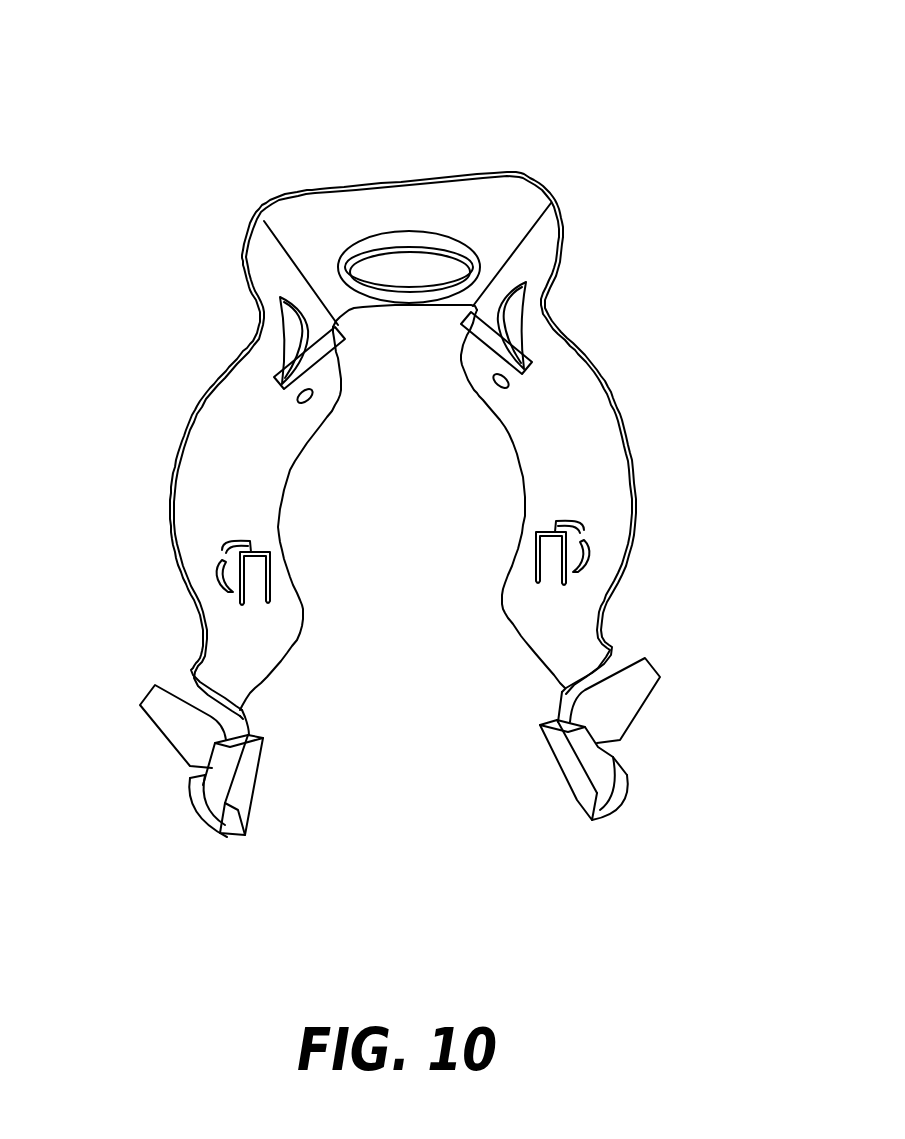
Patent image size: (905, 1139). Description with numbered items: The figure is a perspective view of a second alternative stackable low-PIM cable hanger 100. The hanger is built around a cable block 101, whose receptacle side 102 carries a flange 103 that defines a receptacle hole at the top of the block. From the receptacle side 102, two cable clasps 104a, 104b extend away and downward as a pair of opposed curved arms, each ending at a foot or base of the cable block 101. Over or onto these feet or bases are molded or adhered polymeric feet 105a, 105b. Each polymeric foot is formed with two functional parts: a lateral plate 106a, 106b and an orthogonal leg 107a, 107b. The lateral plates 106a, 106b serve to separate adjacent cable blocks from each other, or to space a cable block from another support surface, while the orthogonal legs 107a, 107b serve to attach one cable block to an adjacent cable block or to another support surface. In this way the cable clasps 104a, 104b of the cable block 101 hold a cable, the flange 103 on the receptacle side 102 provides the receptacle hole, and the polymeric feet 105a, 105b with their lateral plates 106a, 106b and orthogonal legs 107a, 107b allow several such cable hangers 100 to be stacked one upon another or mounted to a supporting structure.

The stackable low-PIM cable hanger 100 is at (438, 466).
The cable block 101 is at (390, 409).
The receptacle side 102 is at (338, 192).
The flange 103 is at (405, 237).
The cable clasp 104a is at (213, 473).
The cable clasp 104b is at (602, 417).
The polymeric foot 105a is at (154, 801).
The polymeric foot 105b is at (645, 786).
The lateral plate 106a is at (183, 740).
The lateral plate 106b is at (622, 720).
The orthogonal leg 107a is at (215, 810).
The orthogonal leg 107b is at (585, 813).